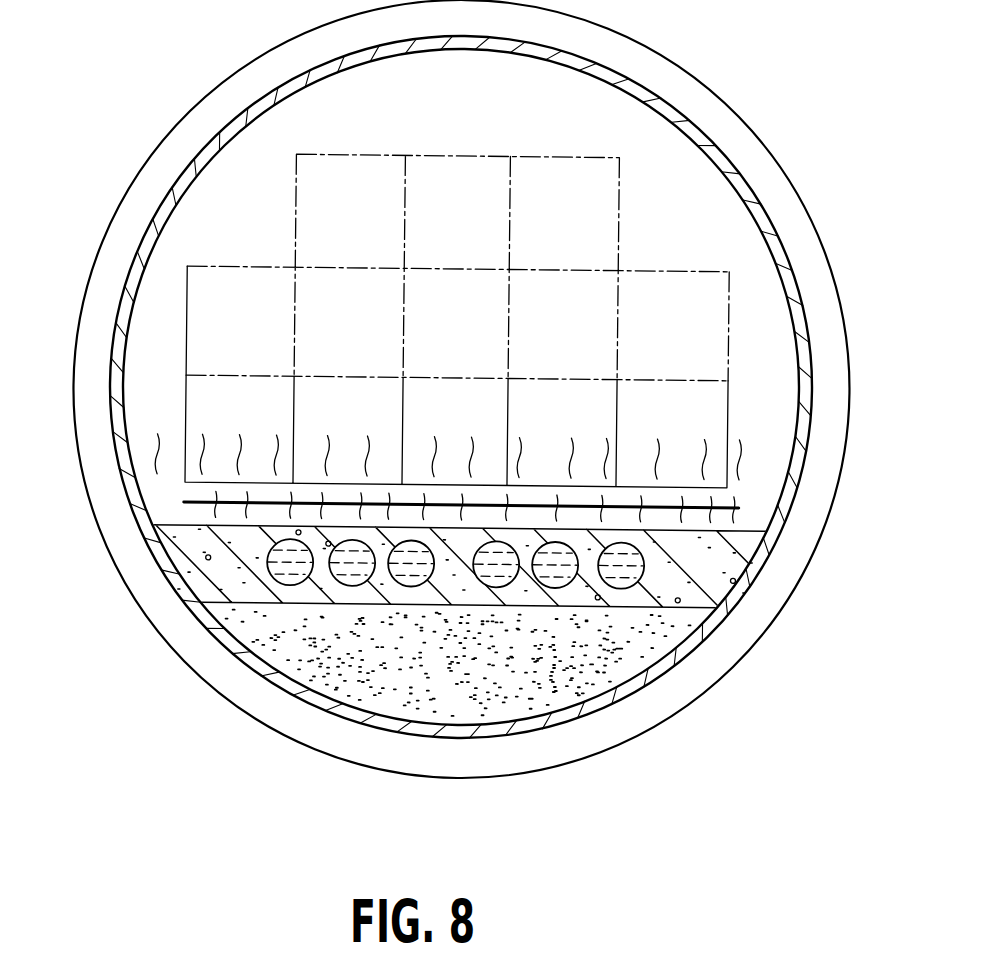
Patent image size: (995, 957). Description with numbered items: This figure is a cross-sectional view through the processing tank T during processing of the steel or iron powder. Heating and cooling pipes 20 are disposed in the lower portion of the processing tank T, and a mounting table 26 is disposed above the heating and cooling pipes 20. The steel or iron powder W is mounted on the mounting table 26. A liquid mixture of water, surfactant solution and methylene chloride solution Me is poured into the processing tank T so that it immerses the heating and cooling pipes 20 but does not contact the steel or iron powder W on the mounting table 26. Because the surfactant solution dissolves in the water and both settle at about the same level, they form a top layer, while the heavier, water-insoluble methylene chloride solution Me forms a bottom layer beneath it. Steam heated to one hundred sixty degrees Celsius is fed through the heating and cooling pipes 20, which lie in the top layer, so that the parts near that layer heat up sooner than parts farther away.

The processing tank T is at (217, 135).
The steel or iron powder W is at (290, 242).
The mounting table 26 is at (447, 487).
The heating and cooling pipes 20 is at (347, 588).
The methylene chloride solution Me is at (422, 697).